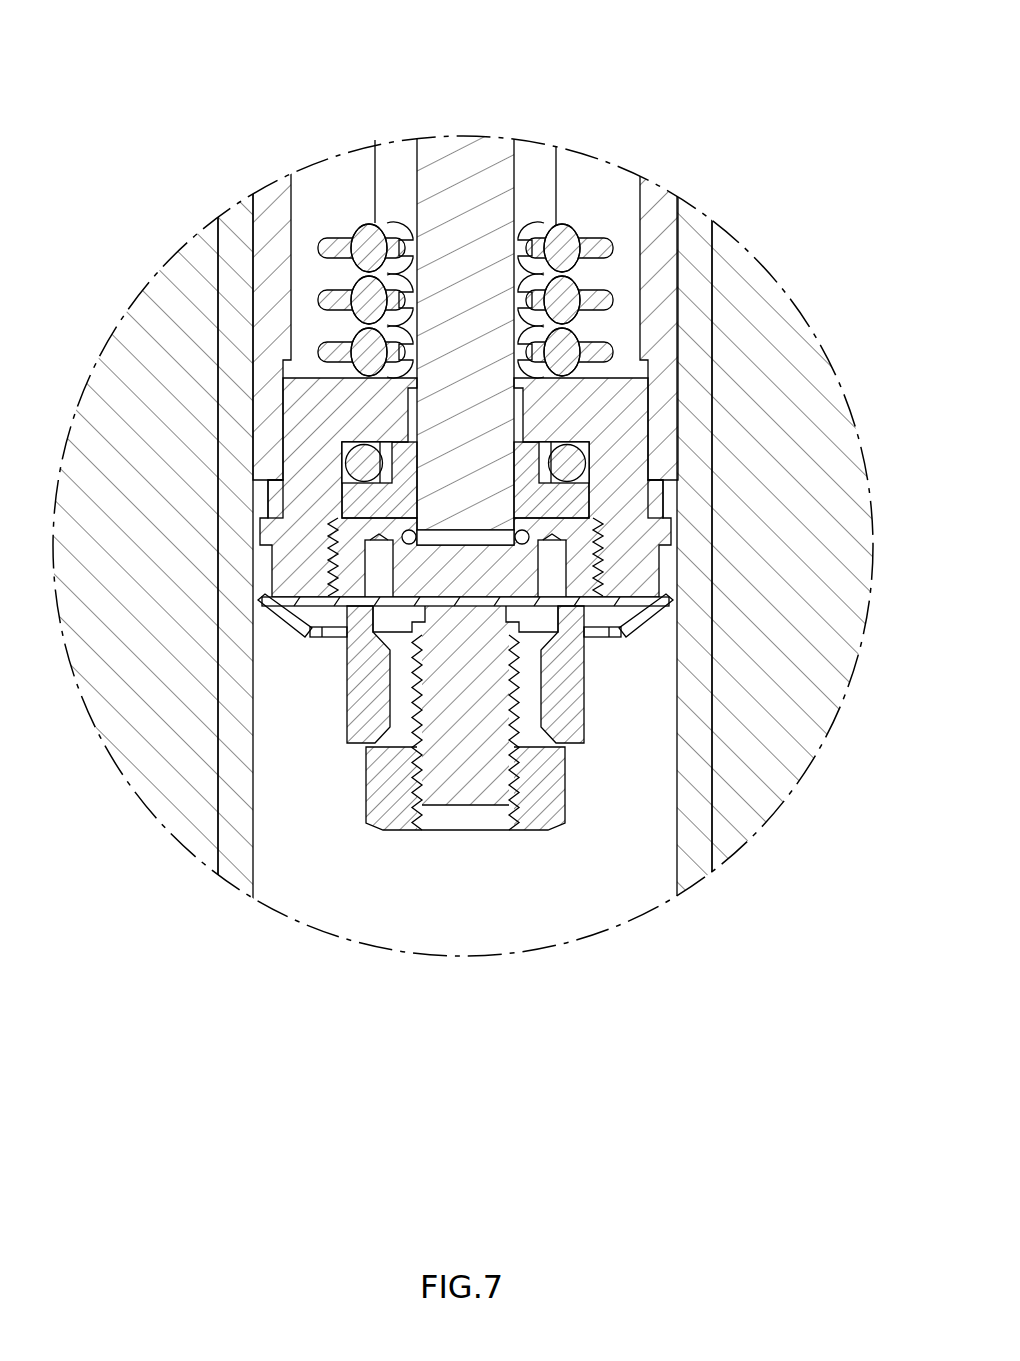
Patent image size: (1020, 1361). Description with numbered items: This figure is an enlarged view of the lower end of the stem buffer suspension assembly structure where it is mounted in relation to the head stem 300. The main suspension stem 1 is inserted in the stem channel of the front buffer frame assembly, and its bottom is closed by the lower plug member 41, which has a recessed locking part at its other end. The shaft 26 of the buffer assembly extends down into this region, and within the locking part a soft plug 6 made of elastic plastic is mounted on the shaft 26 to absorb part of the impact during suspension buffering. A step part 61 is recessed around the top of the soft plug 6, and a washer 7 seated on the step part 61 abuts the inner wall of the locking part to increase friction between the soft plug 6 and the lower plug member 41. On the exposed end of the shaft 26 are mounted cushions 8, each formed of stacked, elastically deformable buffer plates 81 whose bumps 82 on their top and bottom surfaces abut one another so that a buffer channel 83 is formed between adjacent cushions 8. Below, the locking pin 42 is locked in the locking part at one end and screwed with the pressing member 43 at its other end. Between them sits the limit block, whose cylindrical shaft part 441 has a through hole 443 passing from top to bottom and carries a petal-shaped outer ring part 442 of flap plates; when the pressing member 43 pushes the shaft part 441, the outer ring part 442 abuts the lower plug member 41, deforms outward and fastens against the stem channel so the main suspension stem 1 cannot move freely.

The main suspension stem 1 is at (272, 192).
The shaft 26 is at (468, 150).
The lower plug member 41 is at (318, 408).
The washer 7 is at (350, 478).
The cushions 8 is at (567, 224).
The buffer plates 81 is at (590, 240).
The bumps 82 is at (563, 228).
The buffer channel 83 is at (600, 278).
The soft plug 6 is at (587, 517).
The step part 61 is at (582, 498).
The locking pin 42 is at (585, 563).
The through hole 443 is at (405, 695).
The outer ring part 442 is at (637, 622).
The shaft part 441 is at (380, 667).
The pressing member 43 is at (386, 808).
The head stem 300 is at (745, 849).